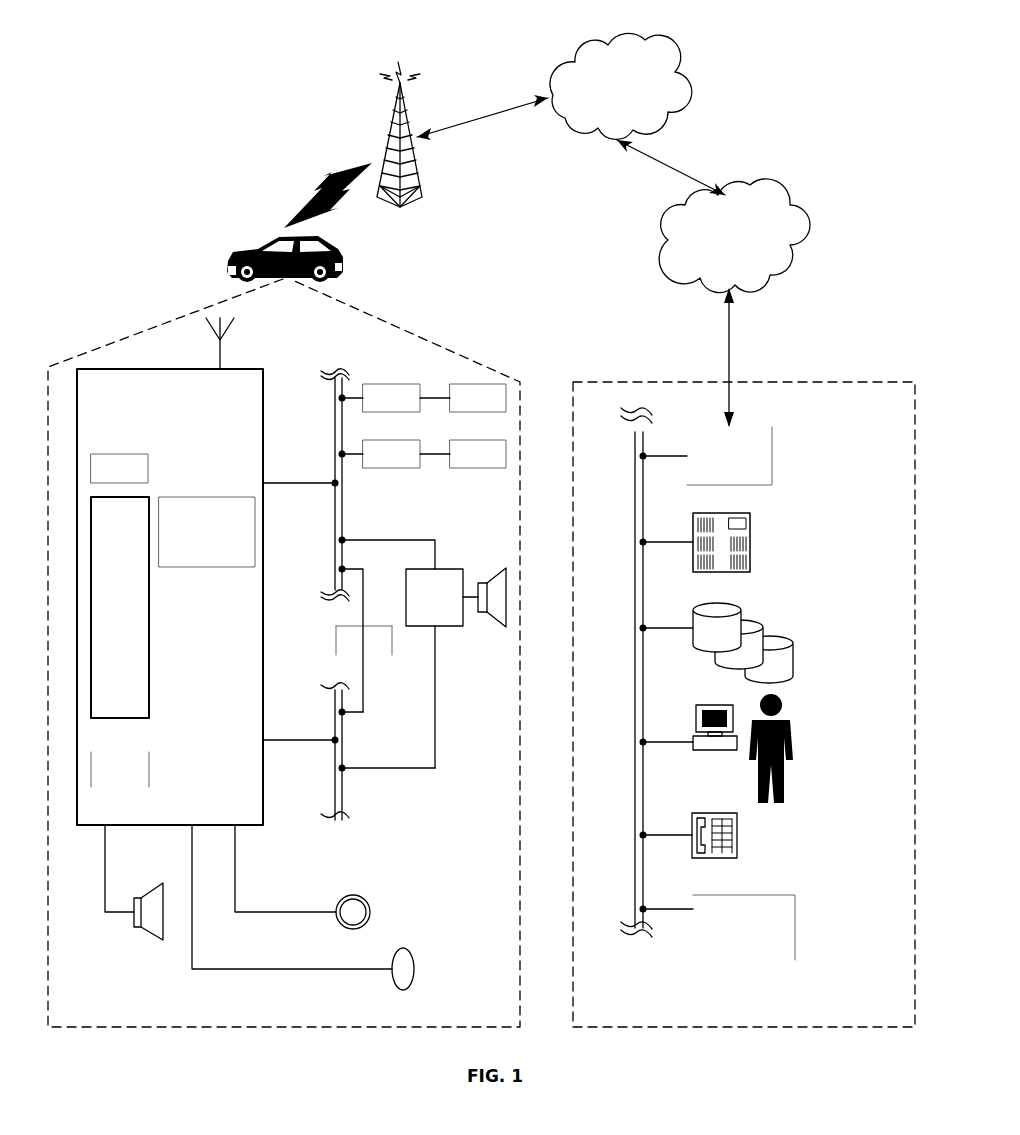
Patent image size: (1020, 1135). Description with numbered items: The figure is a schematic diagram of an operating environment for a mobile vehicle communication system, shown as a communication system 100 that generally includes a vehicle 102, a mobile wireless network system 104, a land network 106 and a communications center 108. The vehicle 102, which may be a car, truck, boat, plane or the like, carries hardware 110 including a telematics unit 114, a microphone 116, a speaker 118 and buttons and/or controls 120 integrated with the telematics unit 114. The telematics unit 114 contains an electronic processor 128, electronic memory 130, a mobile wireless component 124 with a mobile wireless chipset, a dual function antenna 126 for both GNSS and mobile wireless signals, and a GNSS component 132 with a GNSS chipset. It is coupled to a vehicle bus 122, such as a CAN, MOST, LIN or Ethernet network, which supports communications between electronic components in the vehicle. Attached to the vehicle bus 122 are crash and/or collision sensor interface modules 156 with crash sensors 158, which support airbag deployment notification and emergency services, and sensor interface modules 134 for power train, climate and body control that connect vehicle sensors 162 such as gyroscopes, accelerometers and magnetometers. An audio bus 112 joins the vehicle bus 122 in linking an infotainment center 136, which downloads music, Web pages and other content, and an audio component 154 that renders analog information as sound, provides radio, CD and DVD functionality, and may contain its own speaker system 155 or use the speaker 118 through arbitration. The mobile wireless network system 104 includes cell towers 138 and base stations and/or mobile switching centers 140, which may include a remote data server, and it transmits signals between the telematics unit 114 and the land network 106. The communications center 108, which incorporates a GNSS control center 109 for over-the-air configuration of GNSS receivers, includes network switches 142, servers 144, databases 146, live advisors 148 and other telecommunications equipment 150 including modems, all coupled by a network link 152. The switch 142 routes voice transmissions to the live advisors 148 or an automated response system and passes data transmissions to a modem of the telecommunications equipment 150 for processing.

The communication system 100 is at (432, 14).
The vehicle 102 is at (233, 255).
The mobile wireless network system 104 is at (527, 193).
The land network 106 is at (734, 236).
The communications center 108 is at (744, 704).
The GNSS control center 109 is at (719, 927).
The hardware 110 is at (284, 653).
The audio bus 112 is at (335, 790).
The telematics unit 114 is at (170, 597).
The microphone 116 is at (407, 947).
The speaker 118 is at (150, 935).
The buttons and/or controls 120 is at (350, 895).
The vehicle bus 122 is at (343, 525).
The mobile wireless component 124 is at (119, 468).
The dual function antenna 126 is at (222, 360).
The electronic processor 128 is at (120, 607).
The electronic memory 130 is at (120, 769).
The GNSS component 132 is at (207, 532).
The sensor interface modules 134 is at (381, 454).
The infotainment center 136 is at (364, 640).
The cell towers 138 is at (408, 112).
The base stations and/or mobile switching centers 140 is at (621, 86).
The network switches 142 is at (707, 456).
The servers 144 is at (750, 537).
The databases 146 is at (793, 650).
The live advisors 148 is at (787, 720).
The telecommunications equipment 150 is at (737, 830).
The network link 152 is at (633, 675).
The audio component 154 is at (402, 654).
The speaker system 155 is at (503, 625).
The crash and/or collision sensor interface modules 156 is at (381, 398).
The crash sensors 158 is at (463, 398).
The vehicle sensors 162 is at (463, 454).